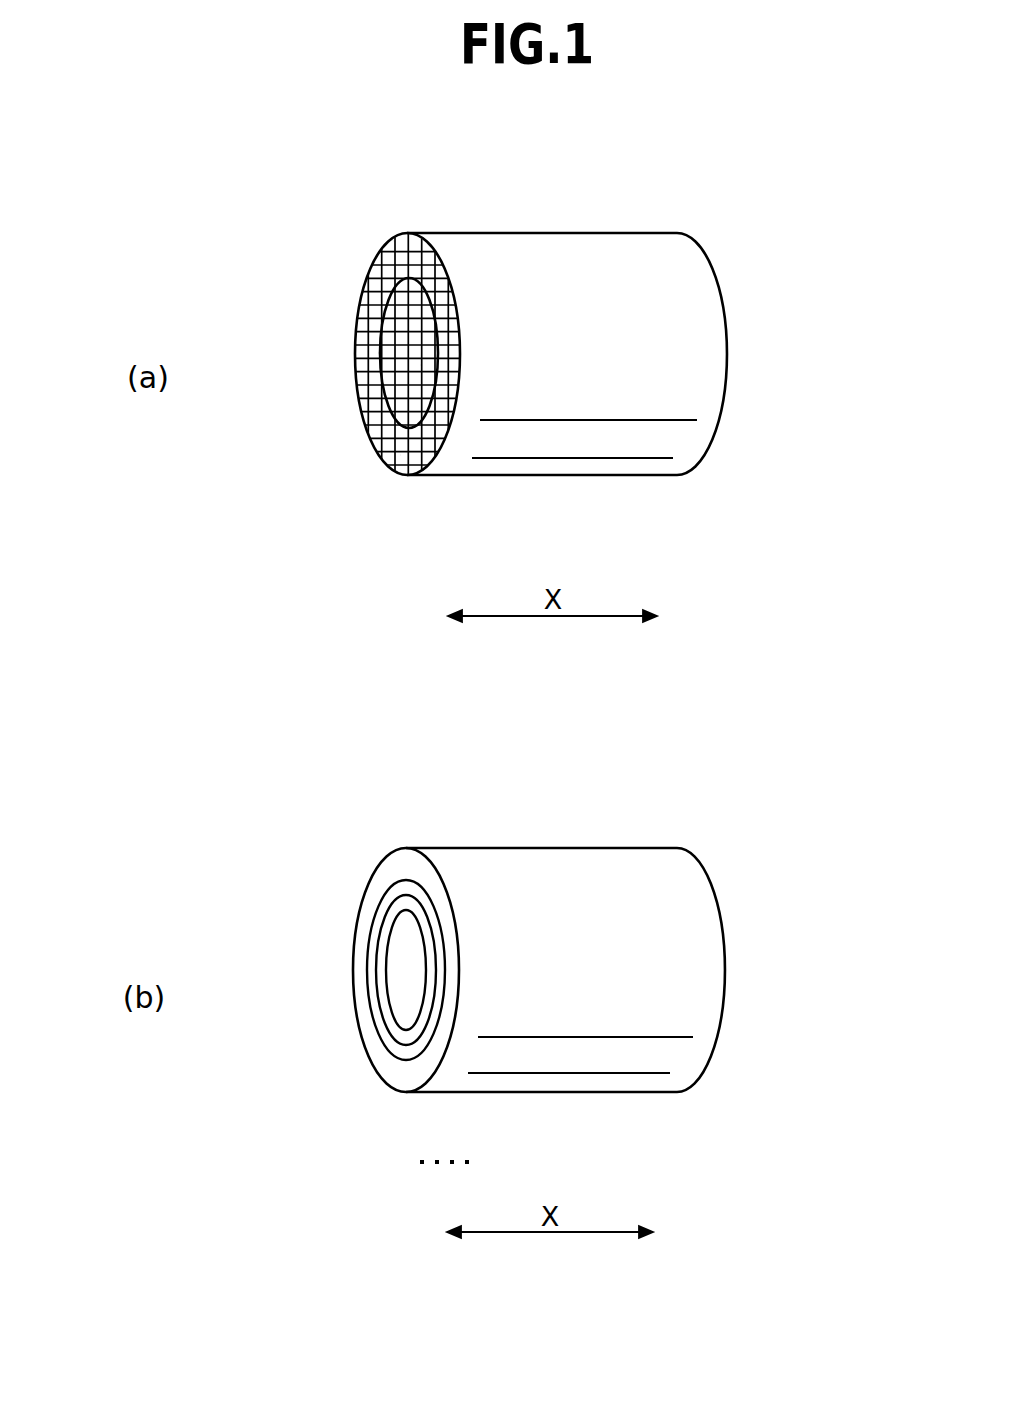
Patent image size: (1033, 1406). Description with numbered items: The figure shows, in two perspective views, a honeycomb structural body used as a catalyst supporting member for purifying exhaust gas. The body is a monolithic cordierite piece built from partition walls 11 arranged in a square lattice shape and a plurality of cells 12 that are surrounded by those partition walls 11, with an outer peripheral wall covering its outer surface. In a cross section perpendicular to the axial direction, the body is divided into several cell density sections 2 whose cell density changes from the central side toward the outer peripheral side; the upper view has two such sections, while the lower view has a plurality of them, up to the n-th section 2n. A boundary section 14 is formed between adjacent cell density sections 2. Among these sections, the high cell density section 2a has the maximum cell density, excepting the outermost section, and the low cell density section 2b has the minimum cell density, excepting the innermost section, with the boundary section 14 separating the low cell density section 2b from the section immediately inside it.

The cell density section 2 is at (328, 332).
The n-th cell density section 2n is at (435, 1043).
The high cell density section 2a is at (420, 365).
The low cell density section 2b is at (442, 280).
The partition walls 11 is at (403, 252).
The cells 12 is at (400, 455).
The boundary section 14 is at (378, 353).